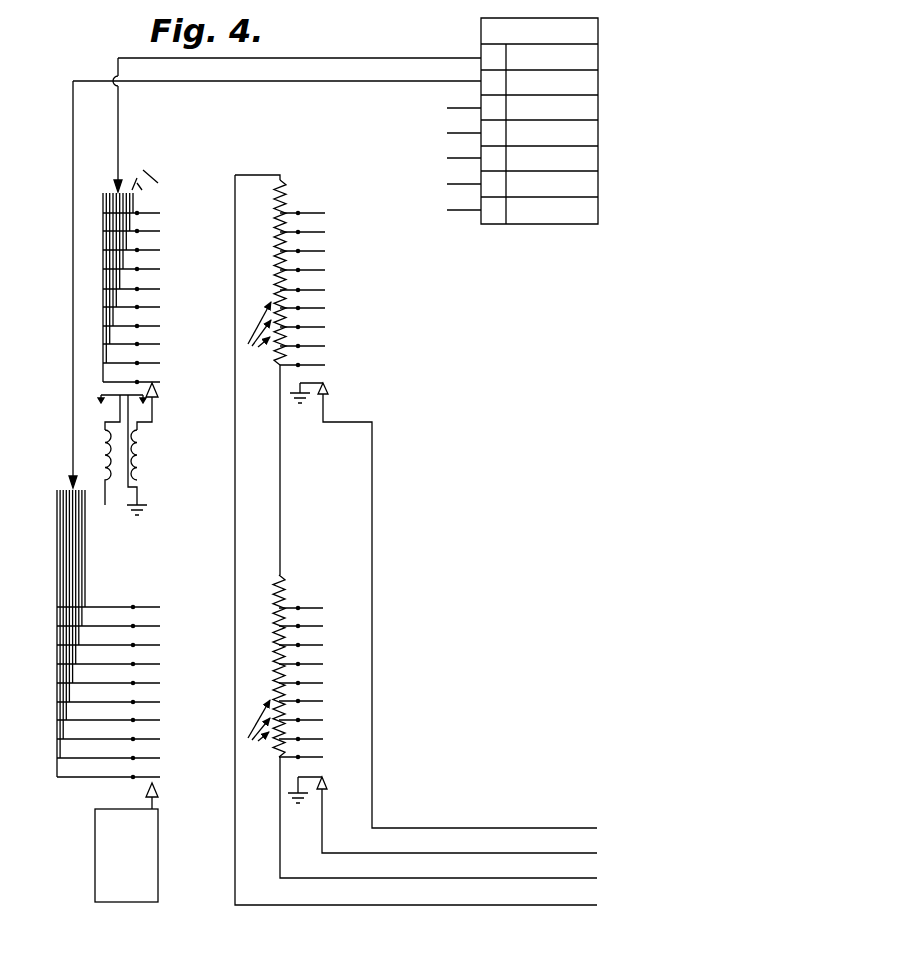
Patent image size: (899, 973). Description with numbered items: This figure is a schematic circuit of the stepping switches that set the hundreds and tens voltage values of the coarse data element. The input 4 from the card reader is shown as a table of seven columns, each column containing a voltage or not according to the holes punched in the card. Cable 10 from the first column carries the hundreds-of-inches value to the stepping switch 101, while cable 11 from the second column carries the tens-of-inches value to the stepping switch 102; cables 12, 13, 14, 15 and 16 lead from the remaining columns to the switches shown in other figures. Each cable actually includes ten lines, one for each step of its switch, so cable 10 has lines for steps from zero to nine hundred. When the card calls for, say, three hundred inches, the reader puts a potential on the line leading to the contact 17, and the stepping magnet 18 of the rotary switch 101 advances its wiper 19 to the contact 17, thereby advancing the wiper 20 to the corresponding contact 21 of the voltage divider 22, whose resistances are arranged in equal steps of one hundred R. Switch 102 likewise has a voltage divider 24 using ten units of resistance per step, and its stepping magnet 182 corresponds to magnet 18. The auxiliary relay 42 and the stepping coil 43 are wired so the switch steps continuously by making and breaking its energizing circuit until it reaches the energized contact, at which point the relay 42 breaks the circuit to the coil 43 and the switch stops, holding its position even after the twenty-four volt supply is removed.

The input 4 is at (558, 19).
The cable 10 is at (456, 56).
The cable 11 is at (459, 79).
The cable 12 is at (462, 106).
The cable 13 is at (462, 131).
The cable 14 is at (462, 156).
The cable 15 is at (462, 182).
The cable 16 is at (462, 208).
The contact 17 is at (137, 326).
The stepping magnet 18 is at (93, 455).
The wiper 19 is at (158, 399).
The wiper 20 is at (330, 392).
The contact 21 is at (325, 327).
The voltage divider 22 is at (274, 262).
The voltage divider 24 is at (273, 643).
The auxiliary relay 42 is at (143, 452).
The stepping coil 43 is at (101, 440).
The stepping switch 101 is at (201, 163).
The stepping switch 102 is at (198, 568).
The stepping magnet 182 is at (96, 886).